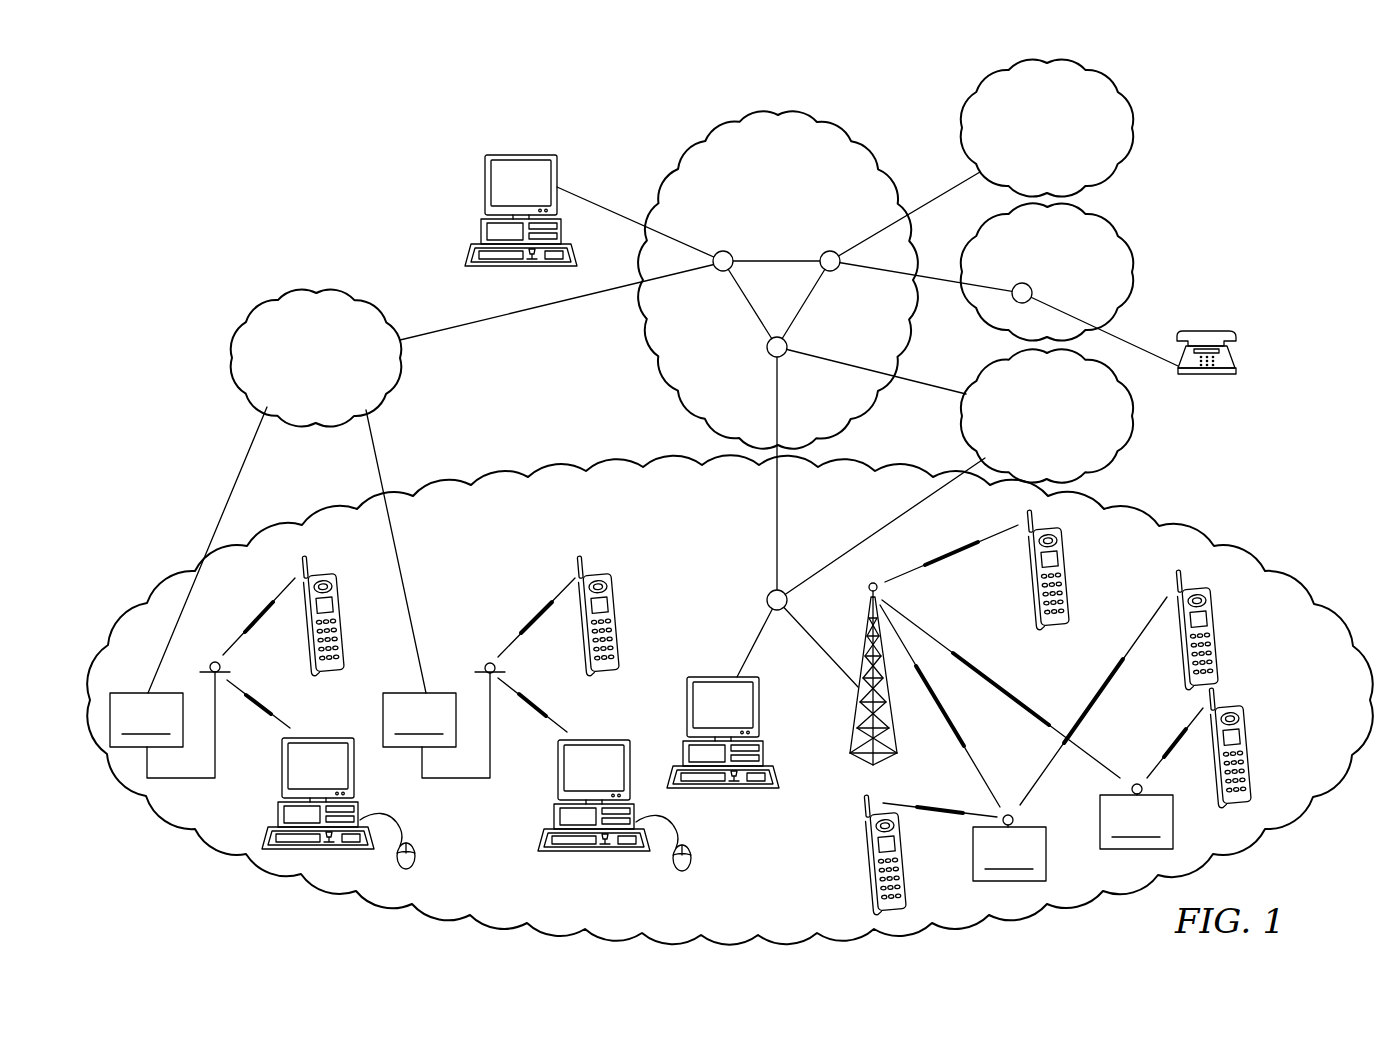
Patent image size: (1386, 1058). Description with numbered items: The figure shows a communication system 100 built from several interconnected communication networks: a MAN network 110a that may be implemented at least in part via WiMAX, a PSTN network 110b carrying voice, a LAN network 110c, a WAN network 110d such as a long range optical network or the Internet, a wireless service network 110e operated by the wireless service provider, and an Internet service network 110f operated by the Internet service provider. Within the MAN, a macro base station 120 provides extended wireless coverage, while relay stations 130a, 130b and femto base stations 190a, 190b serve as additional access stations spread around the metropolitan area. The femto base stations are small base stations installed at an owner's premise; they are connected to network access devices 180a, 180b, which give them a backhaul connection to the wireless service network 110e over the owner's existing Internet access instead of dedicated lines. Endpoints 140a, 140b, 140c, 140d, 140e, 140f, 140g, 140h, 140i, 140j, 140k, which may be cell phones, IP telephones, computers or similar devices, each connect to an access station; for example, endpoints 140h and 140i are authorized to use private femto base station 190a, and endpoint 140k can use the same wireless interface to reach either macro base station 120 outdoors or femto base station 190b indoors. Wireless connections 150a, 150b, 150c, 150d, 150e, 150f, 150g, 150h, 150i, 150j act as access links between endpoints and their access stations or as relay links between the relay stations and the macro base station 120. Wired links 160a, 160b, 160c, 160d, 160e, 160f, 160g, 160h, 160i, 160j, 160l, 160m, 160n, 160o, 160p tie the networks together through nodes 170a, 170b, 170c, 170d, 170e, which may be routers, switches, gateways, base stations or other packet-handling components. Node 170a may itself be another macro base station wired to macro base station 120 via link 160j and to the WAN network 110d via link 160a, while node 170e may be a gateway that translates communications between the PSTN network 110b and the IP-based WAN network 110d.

The communication system 100 is at (364, 224).
The MAN network 110a is at (562, 460).
The PSTN network 110b is at (1128, 242).
The LAN network 110c is at (1140, 127).
The WAN network 110d is at (706, 134).
The wireless service network 110e is at (1136, 418).
The Internet service network 110f is at (232, 345).
The macro base station 120 is at (855, 722).
The relay station 130a is at (1009, 848).
The relay station 130b is at (1136, 816).
The endpoint 140a is at (862, 878).
The endpoint 140b is at (1216, 622).
The endpoint 140c is at (1066, 574).
The endpoint 140d is at (1250, 742).
The endpoint 140e is at (522, 152).
The endpoint 140f is at (1206, 330).
The endpoint 140g is at (762, 760).
The endpoint 140h is at (331, 668).
The endpoint 140i is at (272, 828).
The endpoint 140j is at (546, 828).
The endpoint 140k is at (607, 668).
The wireless connection 150a is at (1176, 734).
The wireless connection 150b is at (1122, 655).
The wireless connection 150c is at (970, 562).
The wireless connection 150d is at (965, 760).
The wireless connection 150e is at (1040, 700).
The wireless connection 150f is at (950, 824).
The wireless connection 150g is at (262, 602).
The wireless connection 150h is at (280, 728).
The wireless connection 150i is at (556, 732).
The wireless connection 150j is at (548, 600).
The wired link 160a is at (768, 552).
The wired link 160b is at (745, 308).
The wired link 160c is at (812, 305).
The wired link 160d is at (750, 655).
The wired link 160e is at (628, 188).
The wired link 160f is at (1152, 345).
The wired link 160g is at (952, 292).
The wired link 160h is at (940, 190).
The wired link 160i is at (788, 257).
The wired link 160j is at (826, 640).
The wired link 160l is at (930, 392).
The wired link 160m is at (854, 543).
The wired link 160n is at (385, 468).
The wired link 160o is at (592, 312).
The wired link 160p is at (240, 468).
The node 170a is at (766, 596).
The node 170b is at (766, 350).
The node 170c is at (718, 250).
The node 170d is at (834, 250).
The node 170e is at (1026, 282).
The network access device 180a is at (146, 720).
The network access device 180b is at (419, 720).
The femto base station 190a is at (226, 672).
The femto base station 190b is at (484, 670).